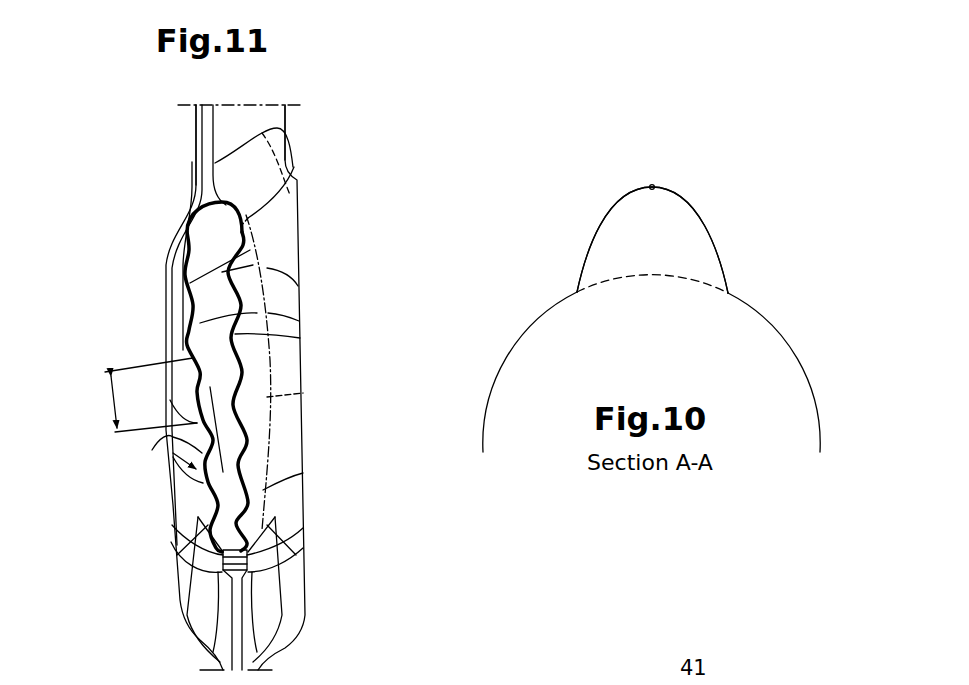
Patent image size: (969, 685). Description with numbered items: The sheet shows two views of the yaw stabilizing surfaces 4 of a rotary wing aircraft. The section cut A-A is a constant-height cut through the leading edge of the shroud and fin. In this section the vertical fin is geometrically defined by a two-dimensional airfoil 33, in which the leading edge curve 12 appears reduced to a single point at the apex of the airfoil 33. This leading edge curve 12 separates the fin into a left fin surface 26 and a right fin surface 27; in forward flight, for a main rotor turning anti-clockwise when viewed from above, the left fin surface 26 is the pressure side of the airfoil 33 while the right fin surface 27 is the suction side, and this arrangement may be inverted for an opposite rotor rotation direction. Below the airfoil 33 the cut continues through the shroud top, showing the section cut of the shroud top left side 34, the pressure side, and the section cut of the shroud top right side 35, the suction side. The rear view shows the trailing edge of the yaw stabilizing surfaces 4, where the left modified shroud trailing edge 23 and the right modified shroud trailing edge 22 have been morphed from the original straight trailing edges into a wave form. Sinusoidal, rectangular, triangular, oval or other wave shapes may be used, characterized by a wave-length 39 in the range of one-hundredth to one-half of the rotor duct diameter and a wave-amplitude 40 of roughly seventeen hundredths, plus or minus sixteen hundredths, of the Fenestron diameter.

In FIG. 11, the yaw stabilizing surfaces 4 is at (121, 223).
In FIG. 10, the leading edge curve 12 is at (651, 182).
In FIG. 11, the right modified shroud trailing edge 22 is at (300, 338).
In FIG. 11, the left modified shroud trailing edge 23 is at (175, 345).
In FIG. 11, the left fin surface 26 is at (164, 132).
In FIG. 10, the left fin surface 26 is at (604, 217).
In FIG. 11, the right fin surface 27 is at (259, 122).
In FIG. 10, the right fin surface 27 is at (716, 242).
In FIG. 10, the airfoil 33 is at (703, 196).
In FIG. 10, the section cut of shroud top left side 34 is at (540, 318).
In FIG. 10, the section cut of shroud top right side 35 is at (793, 352).
In FIG. 11, the wave-length 39 is at (111, 404).
In FIG. 11, the wave-amplitude 40 is at (152, 450).